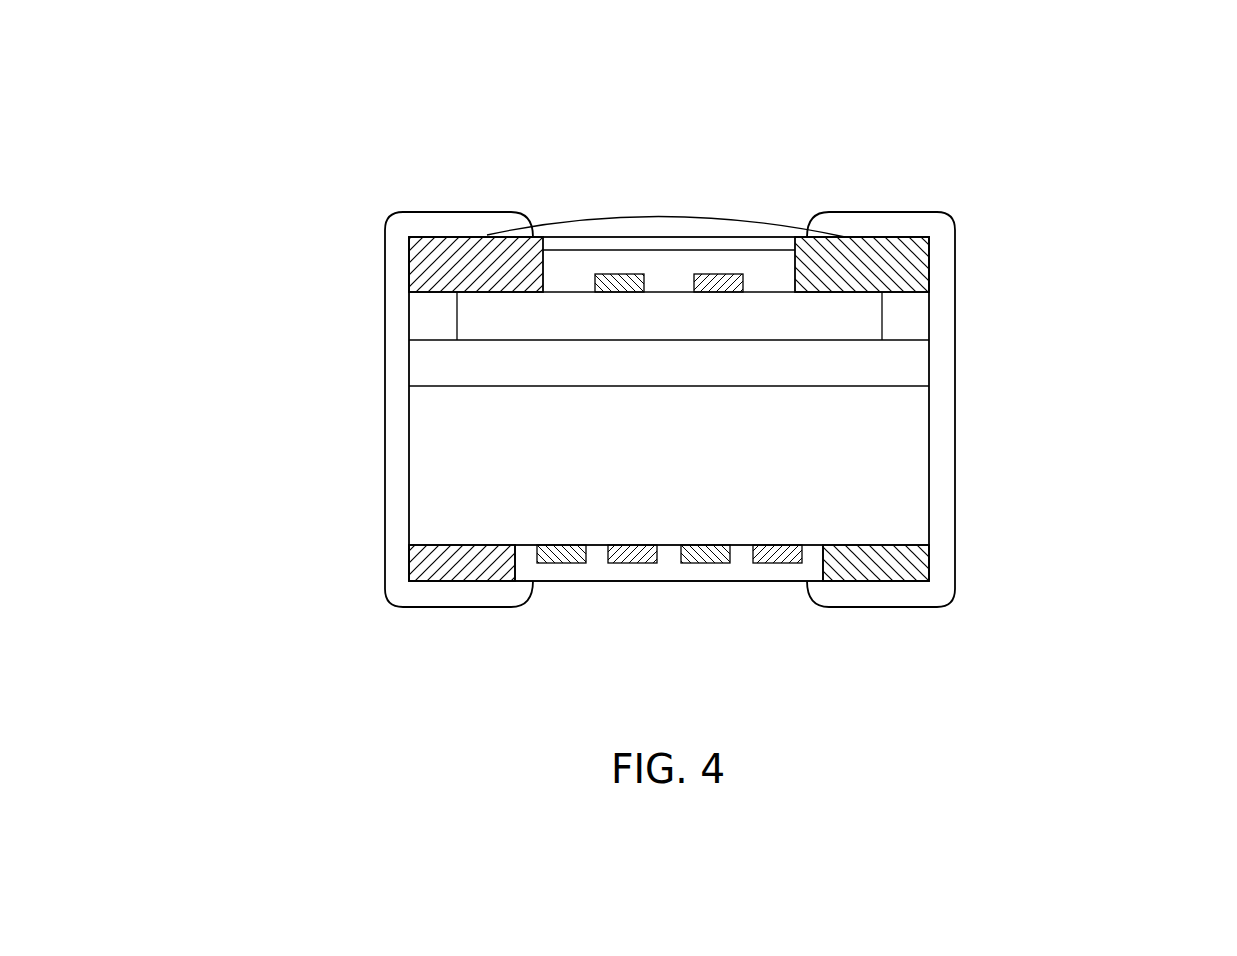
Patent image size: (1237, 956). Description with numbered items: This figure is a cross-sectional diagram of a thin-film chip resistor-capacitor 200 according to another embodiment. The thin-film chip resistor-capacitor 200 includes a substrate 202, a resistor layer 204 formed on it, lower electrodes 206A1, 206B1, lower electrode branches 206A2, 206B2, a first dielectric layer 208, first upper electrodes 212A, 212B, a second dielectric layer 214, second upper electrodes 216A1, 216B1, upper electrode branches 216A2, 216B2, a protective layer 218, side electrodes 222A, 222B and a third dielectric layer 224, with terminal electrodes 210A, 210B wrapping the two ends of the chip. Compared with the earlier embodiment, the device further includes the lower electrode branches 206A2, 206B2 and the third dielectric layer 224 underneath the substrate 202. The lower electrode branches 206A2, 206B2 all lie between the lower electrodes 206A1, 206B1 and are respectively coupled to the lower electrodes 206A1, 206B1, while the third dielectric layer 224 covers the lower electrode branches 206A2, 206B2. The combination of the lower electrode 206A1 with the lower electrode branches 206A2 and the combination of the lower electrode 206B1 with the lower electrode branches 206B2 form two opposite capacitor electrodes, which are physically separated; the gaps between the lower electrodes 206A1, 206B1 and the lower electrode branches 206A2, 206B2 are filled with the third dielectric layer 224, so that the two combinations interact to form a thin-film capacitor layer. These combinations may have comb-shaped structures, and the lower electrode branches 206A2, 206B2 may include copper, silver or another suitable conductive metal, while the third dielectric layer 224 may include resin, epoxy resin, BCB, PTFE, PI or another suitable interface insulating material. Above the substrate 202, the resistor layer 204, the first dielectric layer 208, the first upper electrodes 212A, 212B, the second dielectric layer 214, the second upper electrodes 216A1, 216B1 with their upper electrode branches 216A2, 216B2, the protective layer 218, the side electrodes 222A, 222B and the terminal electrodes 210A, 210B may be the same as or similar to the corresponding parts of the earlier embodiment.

The thin-film chip resistor-capacitor 200 is at (337, 113).
The substrate 202 is at (645, 481).
The resistor layer 204 is at (645, 378).
The lower electrode 206A1 is at (413, 566).
The lower electrode branches 206A2 is at (633, 562).
The lower electrode 206B1 is at (925, 565).
The lower electrode branches 206B2 is at (563, 558).
The first dielectric layer 208 is at (667, 303).
The terminal electrode 210A is at (248, 247).
The terminal electrode 210B is at (1092, 247).
The first upper electrode 212A is at (413, 319).
The first upper electrode 212B is at (925, 318).
The second dielectric layer 214 is at (566, 258).
The second upper electrode 216A1 is at (412, 266).
The upper electrode branches 216A2 is at (718, 280).
The second upper electrode 216B1 is at (925, 265).
The upper electrode branches 216B2 is at (620, 282).
The protective layer 218 is at (782, 235).
The side electrode 222A is at (397, 437).
The side electrode 222B is at (943, 437).
The third dielectric layer 224 is at (795, 572).